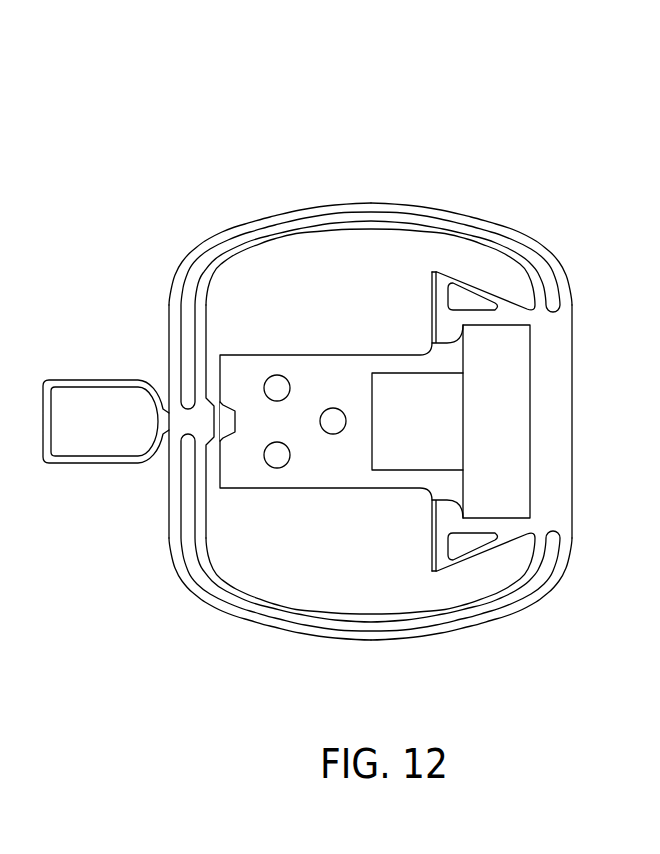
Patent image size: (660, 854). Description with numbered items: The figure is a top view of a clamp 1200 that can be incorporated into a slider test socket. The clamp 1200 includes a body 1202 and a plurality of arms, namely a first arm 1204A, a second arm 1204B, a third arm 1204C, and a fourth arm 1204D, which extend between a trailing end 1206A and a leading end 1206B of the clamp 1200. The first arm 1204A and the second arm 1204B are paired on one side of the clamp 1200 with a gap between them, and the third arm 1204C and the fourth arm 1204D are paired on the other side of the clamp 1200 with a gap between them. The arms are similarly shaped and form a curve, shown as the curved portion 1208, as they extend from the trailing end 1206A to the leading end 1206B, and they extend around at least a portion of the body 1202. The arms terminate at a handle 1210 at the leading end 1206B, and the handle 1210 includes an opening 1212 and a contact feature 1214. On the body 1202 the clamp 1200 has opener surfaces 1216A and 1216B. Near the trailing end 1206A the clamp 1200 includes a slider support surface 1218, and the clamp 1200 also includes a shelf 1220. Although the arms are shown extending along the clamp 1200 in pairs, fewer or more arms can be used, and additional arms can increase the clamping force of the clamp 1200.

The clamp 1200 is at (176, 164).
The body 1202 is at (556, 422).
The first arm 1204A is at (495, 230).
The second arm 1204B is at (427, 230).
The third arm 1204C is at (495, 613).
The fourth arm 1204D is at (398, 627).
The trailing end 1206A is at (573, 337).
The leading end 1206B is at (168, 346).
The curved portion 1208 is at (299, 210).
The handle 1210 is at (46, 381).
The opening 1212 is at (110, 426).
The contact feature 1214 is at (221, 410).
The opener surface 1216A is at (431, 283).
The opener surface 1216B is at (431, 553).
The slider support surface 1218 is at (430, 322).
The shelf 1220 is at (304, 358).